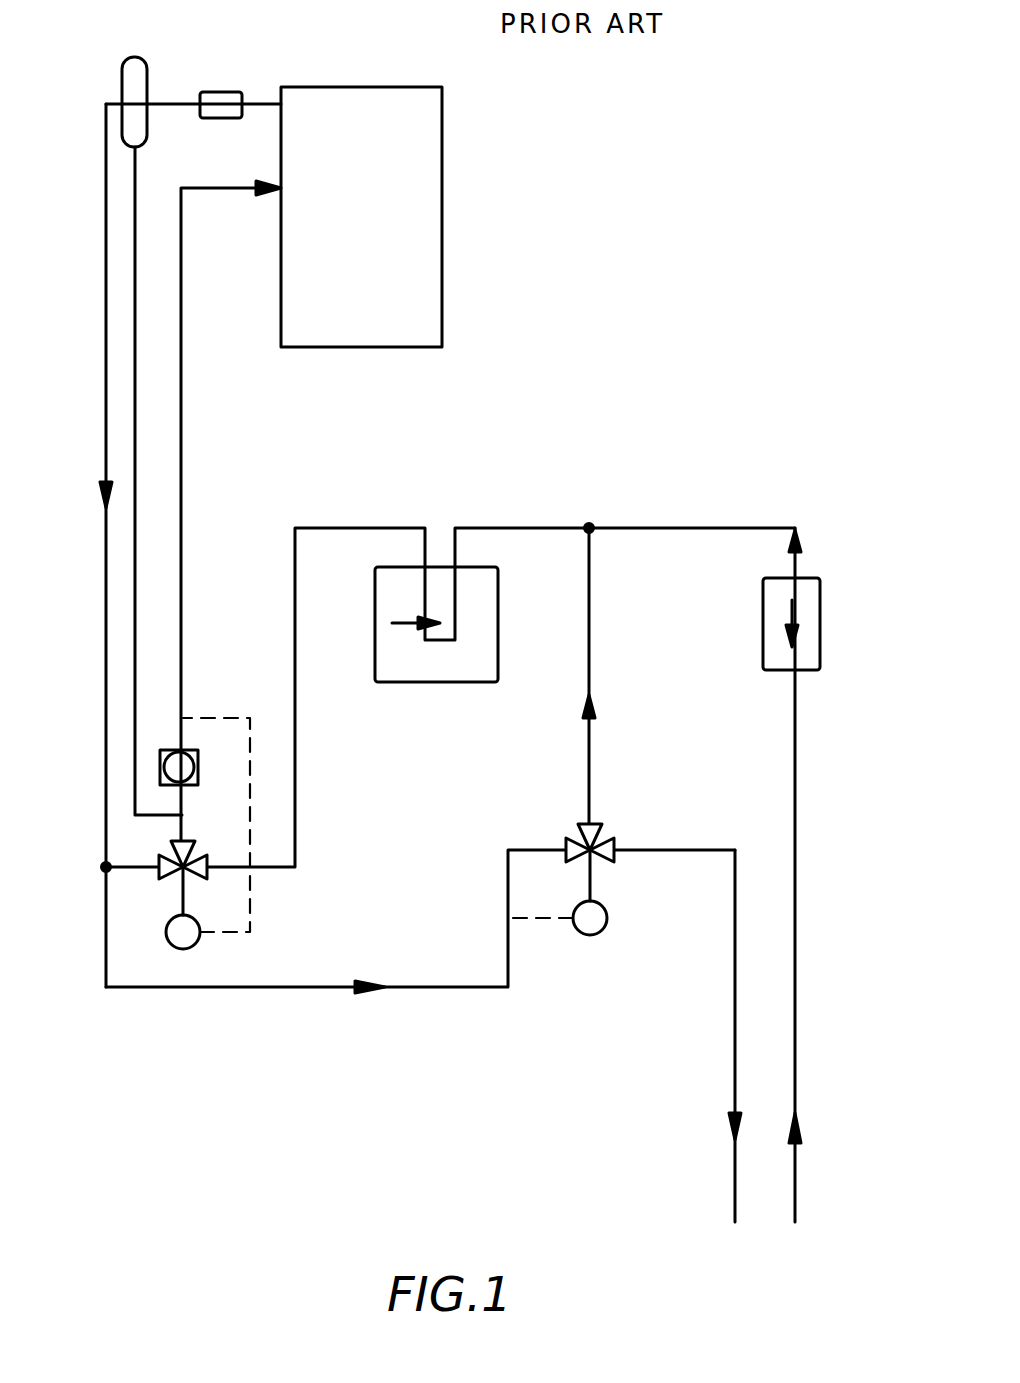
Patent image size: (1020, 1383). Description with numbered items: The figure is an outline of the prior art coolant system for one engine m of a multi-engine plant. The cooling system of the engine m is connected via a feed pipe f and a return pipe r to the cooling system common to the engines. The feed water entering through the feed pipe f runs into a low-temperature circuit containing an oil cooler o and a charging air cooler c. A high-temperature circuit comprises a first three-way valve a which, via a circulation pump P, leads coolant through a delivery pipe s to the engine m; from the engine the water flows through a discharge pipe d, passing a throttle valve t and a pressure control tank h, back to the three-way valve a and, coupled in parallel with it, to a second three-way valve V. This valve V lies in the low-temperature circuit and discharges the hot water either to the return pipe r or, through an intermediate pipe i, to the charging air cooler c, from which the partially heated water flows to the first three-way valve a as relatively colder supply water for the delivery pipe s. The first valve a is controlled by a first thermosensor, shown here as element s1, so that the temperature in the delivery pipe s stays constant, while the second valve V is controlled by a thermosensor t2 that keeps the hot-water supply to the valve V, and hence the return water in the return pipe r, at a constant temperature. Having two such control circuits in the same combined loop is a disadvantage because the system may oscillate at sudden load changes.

The pressure control tank h is at (148, 62).
The throttle valve t is at (222, 92).
The engine m is at (442, 242).
The discharge pipe d is at (103, 445).
The delivery pipe s is at (182, 475).
The circulation pump P is at (178, 750).
The three-way valve a is at (172, 877).
The valve actuator / servo s1 is at (197, 943).
The charging air cooler c is at (443, 682).
The intermediate pipe i is at (590, 665).
The second three-way valve V is at (582, 824).
The thermosensor t2 is at (603, 930).
The oil cooler o is at (805, 625).
The return pipe r is at (733, 1002).
The feed pipe f is at (797, 1023).